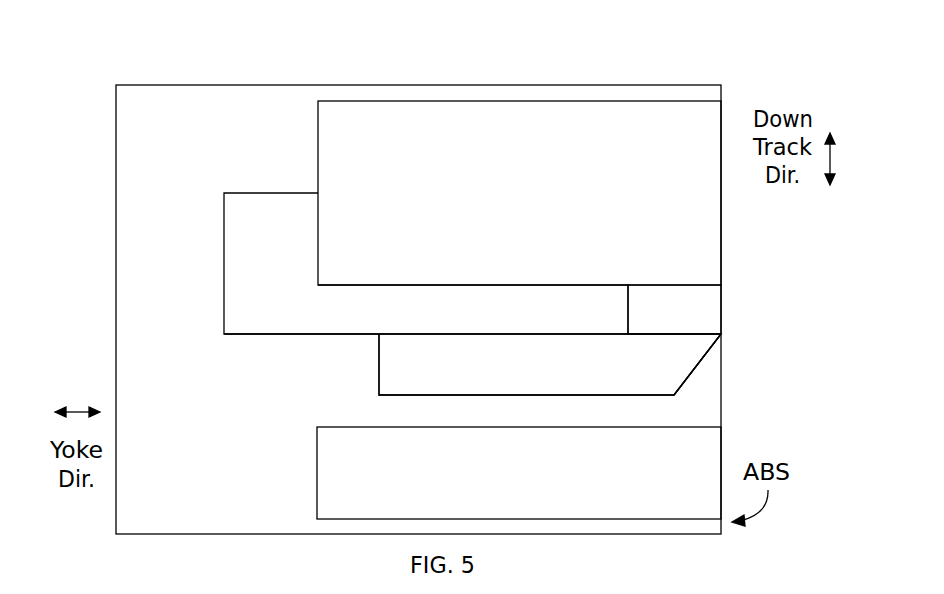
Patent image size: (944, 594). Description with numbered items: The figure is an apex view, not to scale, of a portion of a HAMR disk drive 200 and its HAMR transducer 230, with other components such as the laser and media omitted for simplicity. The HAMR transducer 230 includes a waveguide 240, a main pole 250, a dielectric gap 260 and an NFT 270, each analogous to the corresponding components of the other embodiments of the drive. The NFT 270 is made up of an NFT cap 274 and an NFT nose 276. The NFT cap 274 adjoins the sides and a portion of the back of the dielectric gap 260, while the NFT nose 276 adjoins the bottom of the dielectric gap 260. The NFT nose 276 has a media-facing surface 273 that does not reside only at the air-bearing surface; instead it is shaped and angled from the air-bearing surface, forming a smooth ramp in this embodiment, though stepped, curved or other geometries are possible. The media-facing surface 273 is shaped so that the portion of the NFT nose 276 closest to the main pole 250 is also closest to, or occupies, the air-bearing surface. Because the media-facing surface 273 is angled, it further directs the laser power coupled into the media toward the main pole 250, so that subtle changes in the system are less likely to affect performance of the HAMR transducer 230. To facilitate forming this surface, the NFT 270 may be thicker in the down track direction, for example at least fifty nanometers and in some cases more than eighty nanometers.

The HAMR disk drive 200 is at (462, 66).
The HAMR transducer 230 is at (439, 215).
The main pole 250 is at (519, 193).
The NFT cap 274 is at (471, 309).
The dielectric gap 260 is at (674, 309).
The NFT nose 276 is at (550, 364).
The NFT 270 is at (766, 321).
The media-facing surface 273 is at (703, 383).
The waveguide 240 is at (519, 473).